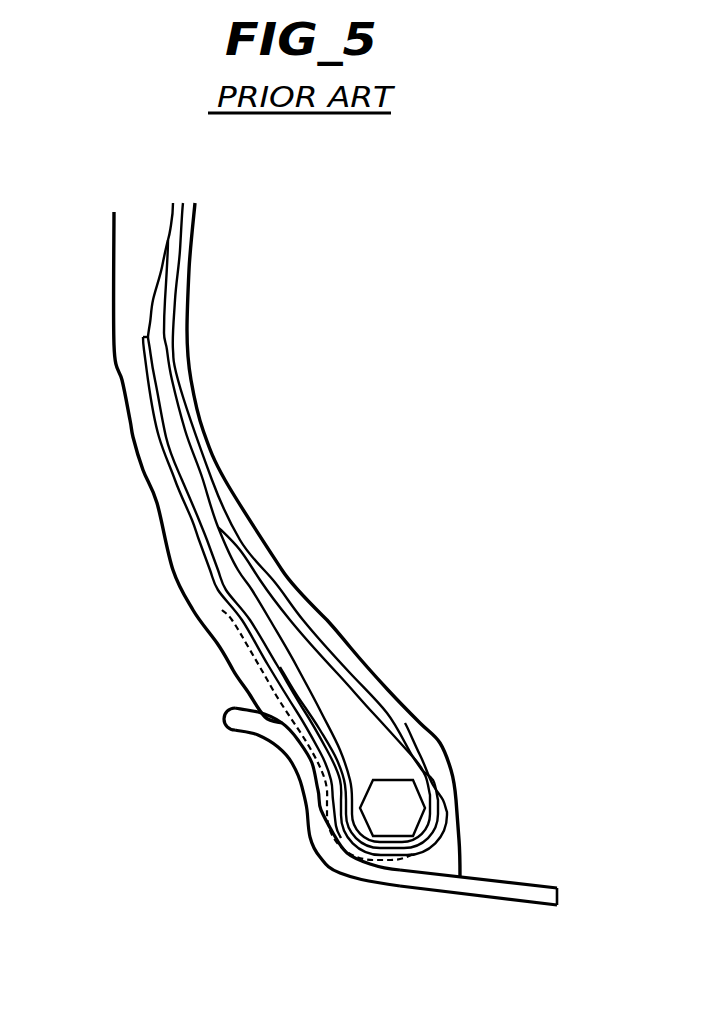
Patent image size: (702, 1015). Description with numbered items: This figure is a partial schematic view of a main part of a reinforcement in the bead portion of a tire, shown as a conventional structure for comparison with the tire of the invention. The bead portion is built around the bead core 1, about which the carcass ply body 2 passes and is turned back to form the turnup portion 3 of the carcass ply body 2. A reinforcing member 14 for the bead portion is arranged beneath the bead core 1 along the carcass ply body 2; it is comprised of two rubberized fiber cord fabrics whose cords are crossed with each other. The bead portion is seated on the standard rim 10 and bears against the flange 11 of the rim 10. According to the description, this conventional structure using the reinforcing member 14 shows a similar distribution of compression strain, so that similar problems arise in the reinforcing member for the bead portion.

The bead core 1 is at (405, 810).
The carcass ply body 2 is at (303, 620).
The turnup portion of the carcass ply body 3 is at (159, 437).
The standard rim 10 is at (493, 888).
The flange of the rim 11 is at (300, 773).
The reinforcing member 14 is at (240, 640).